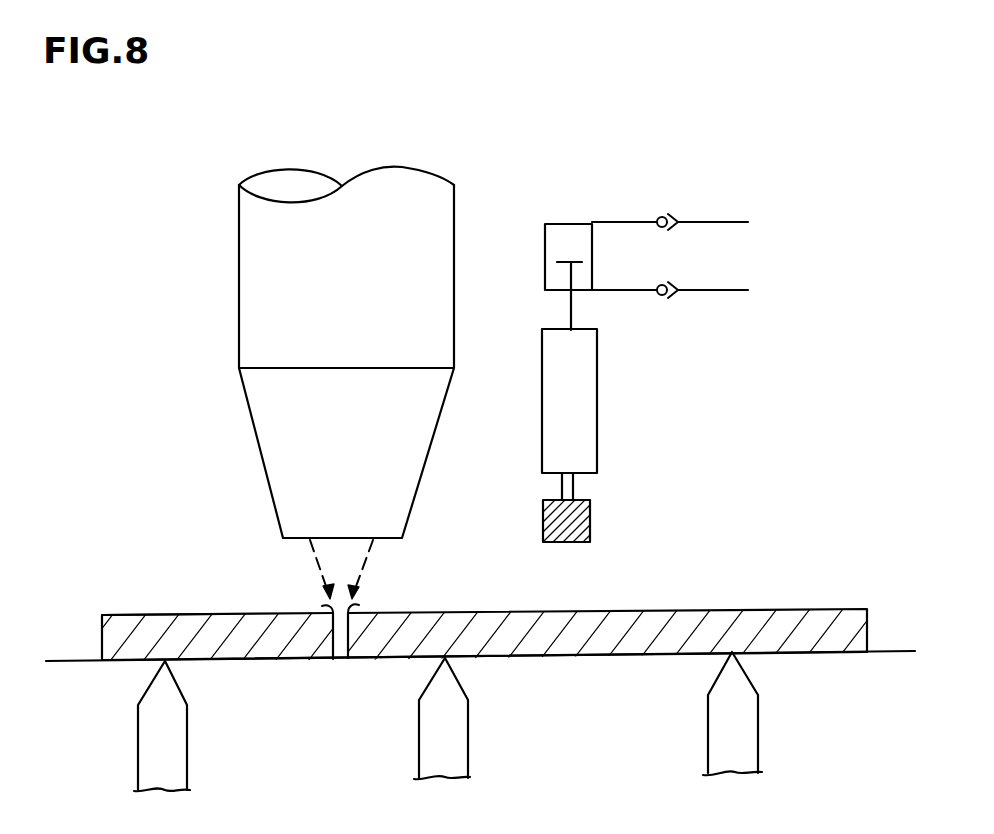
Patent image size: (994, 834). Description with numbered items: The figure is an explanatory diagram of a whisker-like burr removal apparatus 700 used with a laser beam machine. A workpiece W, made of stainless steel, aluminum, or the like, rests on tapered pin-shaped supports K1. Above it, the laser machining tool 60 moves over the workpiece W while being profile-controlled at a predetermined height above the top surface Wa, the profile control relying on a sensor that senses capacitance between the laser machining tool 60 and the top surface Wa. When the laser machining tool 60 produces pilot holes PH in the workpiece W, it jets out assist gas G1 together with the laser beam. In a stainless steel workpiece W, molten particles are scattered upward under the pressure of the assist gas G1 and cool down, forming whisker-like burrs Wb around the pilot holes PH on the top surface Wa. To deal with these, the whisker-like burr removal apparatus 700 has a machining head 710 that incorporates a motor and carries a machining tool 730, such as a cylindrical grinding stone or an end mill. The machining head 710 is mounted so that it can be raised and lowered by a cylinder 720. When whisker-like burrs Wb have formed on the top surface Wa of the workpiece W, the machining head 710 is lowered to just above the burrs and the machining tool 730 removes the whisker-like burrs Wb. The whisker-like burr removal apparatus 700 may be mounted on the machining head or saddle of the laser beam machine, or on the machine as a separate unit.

The laser machining tool 60 is at (420, 150).
The whisker-like burr removal apparatus 700 is at (656, 360).
The machining head 710 is at (590, 348).
The cylinder 720 is at (572, 232).
The machining tool 730 is at (587, 517).
The workpiece W is at (737, 626).
The top surface of the workpiece Wa is at (131, 614).
The whisker-like burrs Wb is at (323, 606).
The assist gas G1 is at (353, 563).
The pilot holes PH is at (341, 660).
The tapered pin-shaped supports K1 is at (178, 762).